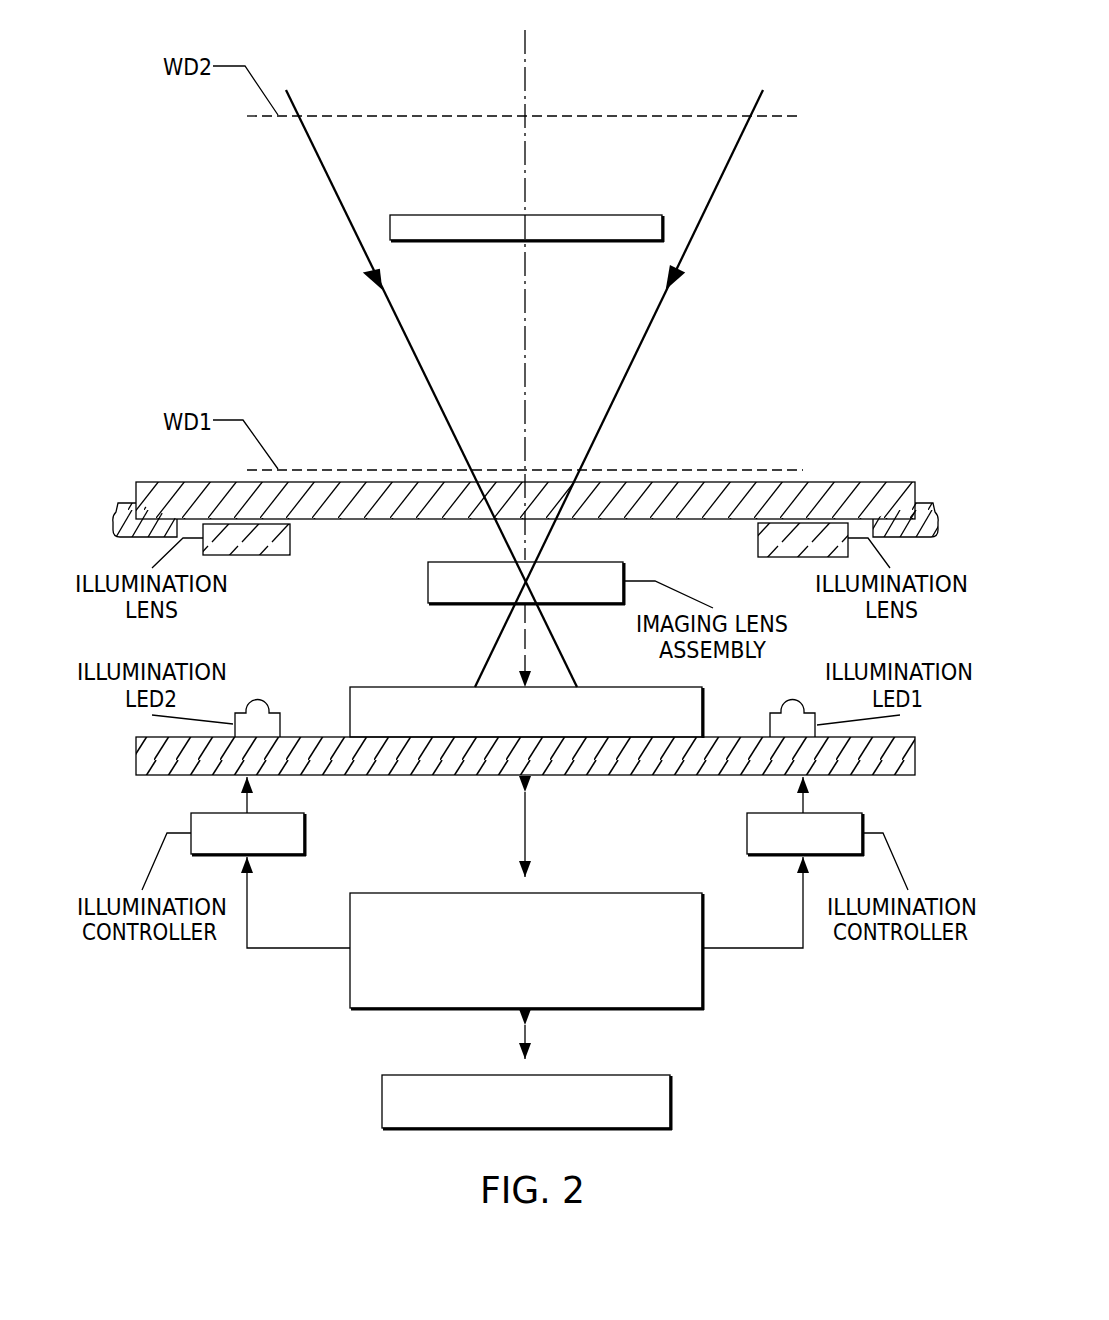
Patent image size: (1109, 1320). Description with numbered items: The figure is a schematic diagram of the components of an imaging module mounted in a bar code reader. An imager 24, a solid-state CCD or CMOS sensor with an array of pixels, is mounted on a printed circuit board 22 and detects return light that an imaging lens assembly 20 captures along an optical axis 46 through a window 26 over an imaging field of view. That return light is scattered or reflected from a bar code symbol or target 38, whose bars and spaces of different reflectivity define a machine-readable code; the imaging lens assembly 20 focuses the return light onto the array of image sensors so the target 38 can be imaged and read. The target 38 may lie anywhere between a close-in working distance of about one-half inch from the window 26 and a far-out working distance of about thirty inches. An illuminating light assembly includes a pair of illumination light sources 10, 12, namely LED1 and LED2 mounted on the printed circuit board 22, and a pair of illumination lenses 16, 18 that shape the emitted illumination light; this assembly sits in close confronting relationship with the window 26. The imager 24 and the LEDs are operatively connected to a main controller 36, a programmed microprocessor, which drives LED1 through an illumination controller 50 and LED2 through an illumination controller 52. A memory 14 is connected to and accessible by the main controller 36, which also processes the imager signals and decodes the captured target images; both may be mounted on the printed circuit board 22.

The illumination light source 10 is at (790, 700).
The illumination light source 12 is at (262, 702).
The memory 14 is at (382, 1100).
The illumination lens 16 is at (758, 540).
The illumination lens 18 is at (290, 540).
The imaging lens assembly 20 is at (428, 581).
The printed circuit board 22 is at (478, 777).
The imager 24 is at (350, 713).
The window 26 is at (839, 482).
The main controller 36 is at (350, 980).
The target 38 is at (601, 215).
The optical axis 46 is at (525, 88).
The illumination controller 50 is at (770, 858).
The illumination controller 52 is at (279, 858).